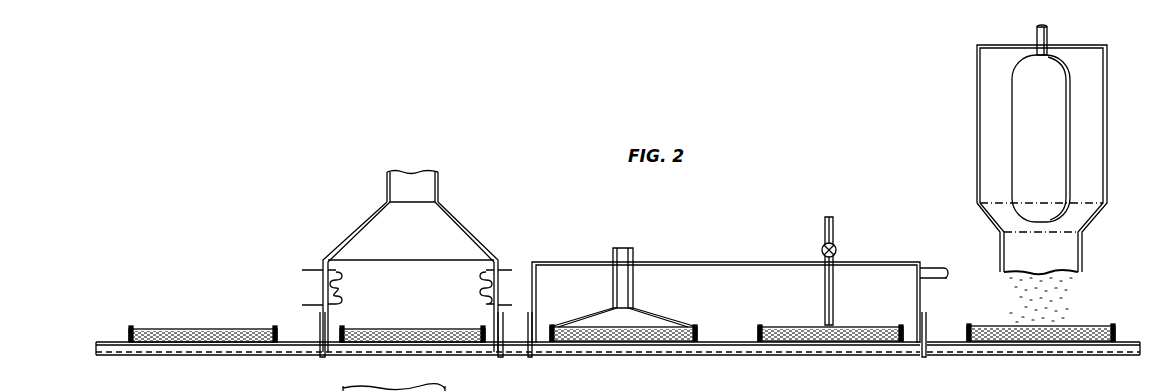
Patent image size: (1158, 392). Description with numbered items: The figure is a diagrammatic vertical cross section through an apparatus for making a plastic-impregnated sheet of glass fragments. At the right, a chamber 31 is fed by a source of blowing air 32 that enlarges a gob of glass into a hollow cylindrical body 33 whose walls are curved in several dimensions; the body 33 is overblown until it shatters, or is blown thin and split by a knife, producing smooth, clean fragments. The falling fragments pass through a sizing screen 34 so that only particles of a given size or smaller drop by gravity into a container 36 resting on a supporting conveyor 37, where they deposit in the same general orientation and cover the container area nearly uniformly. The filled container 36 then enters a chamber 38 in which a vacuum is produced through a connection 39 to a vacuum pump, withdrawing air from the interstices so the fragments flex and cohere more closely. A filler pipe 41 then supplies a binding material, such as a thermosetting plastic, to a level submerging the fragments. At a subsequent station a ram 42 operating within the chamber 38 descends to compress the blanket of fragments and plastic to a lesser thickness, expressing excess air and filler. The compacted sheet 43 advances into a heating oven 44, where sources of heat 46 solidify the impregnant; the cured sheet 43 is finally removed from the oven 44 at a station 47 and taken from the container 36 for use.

The chamber 31 is at (1095, 163).
The source of blowing air 32 is at (1048, 42).
The hollow cylindrical body 33 is at (1068, 118).
The sizing screen 34 is at (1076, 273).
The container 36 is at (1115, 338).
The supporting conveyor 37 is at (1119, 353).
The chamber 38 is at (766, 298).
The connection to a vacuum pump 39 is at (934, 268).
The filler pipe 41 is at (825, 277).
The ram 42 is at (638, 302).
The compacted sheet 43 is at (422, 314).
The heating oven 44 is at (416, 251).
The sources of heat 46 is at (344, 298).
The station 47 is at (187, 312).